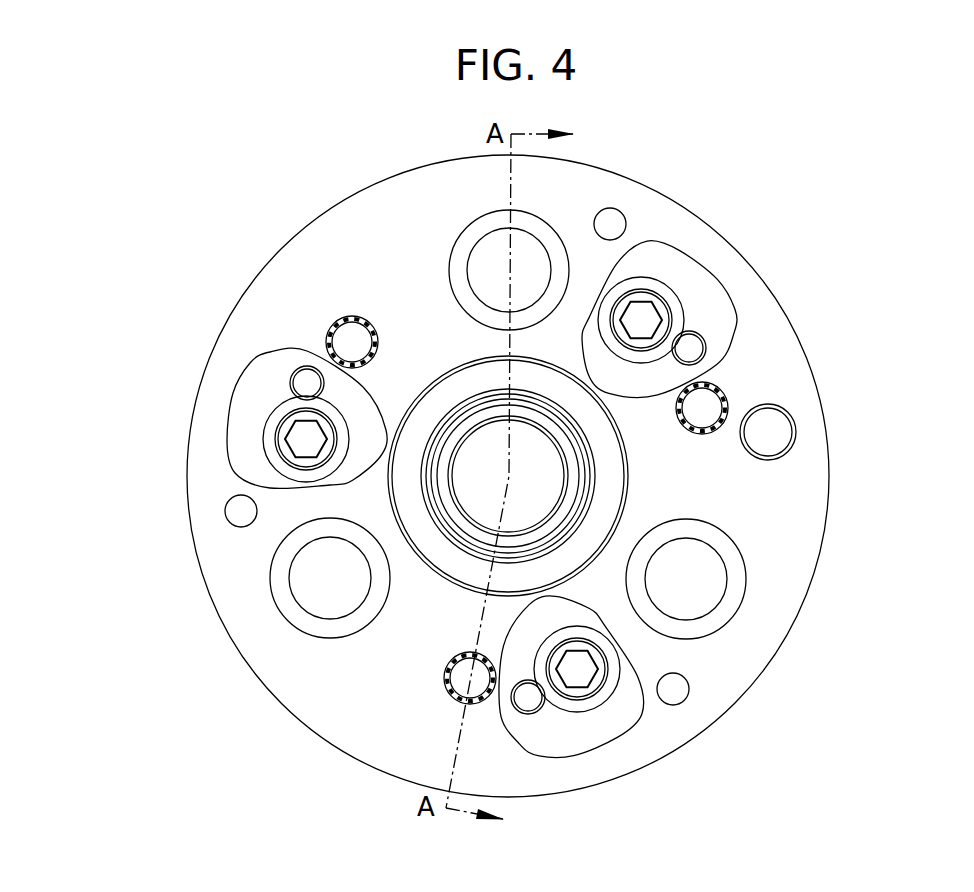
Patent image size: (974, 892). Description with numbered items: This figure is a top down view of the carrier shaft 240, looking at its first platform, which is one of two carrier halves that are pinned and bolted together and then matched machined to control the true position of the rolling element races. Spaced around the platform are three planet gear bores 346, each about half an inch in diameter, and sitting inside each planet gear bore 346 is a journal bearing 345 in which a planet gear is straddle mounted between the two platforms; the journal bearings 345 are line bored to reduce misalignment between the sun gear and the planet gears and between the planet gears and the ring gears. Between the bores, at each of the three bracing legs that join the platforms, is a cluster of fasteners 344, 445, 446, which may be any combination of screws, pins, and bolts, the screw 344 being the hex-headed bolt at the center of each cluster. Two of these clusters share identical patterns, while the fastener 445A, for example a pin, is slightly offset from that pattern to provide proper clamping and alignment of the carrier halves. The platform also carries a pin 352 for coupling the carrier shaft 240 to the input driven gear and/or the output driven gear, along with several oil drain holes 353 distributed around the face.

The carrier shaft 240 is at (963, 186).
The screw 344 is at (265, 425).
The journal bearings 345 is at (468, 257).
The planet gear bores 346 is at (477, 220).
The pin 352 is at (788, 453).
The oil drain holes 353 is at (225, 518).
The fastener 445 is at (290, 370).
The fastener 445A is at (531, 713).
The fastener 446 is at (333, 322).